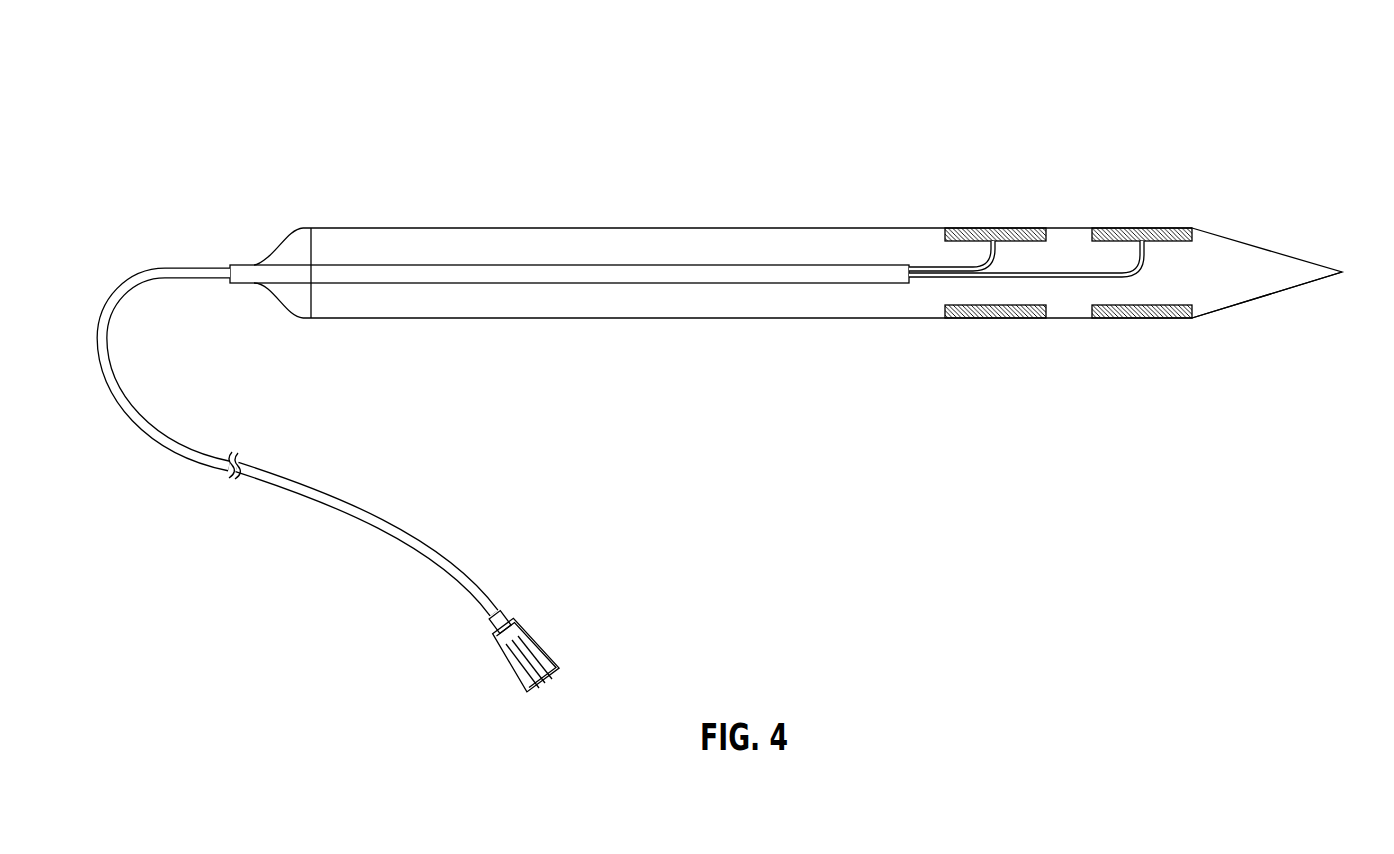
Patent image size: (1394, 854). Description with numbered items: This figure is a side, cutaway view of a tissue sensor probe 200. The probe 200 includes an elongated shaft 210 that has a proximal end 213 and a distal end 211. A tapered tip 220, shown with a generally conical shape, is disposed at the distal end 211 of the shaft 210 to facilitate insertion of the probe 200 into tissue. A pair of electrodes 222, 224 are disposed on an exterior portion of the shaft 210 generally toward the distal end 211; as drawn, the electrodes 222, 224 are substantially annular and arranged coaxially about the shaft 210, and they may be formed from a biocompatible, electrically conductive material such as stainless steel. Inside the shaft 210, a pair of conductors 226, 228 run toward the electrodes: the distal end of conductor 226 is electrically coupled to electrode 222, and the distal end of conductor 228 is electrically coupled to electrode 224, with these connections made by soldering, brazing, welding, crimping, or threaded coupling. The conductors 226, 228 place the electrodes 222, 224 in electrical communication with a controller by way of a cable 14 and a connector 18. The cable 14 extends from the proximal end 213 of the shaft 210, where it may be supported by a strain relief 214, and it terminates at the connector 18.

The tissue sensor probe 200 is at (887, 75).
The elongated shaft 210 is at (527, 227).
The proximal end 213 is at (318, 206).
The strain relief 214 is at (279, 241).
The electrode 222 is at (1142, 227).
The electrode 224 is at (997, 227).
The conductor 226 is at (934, 271).
The conductor 228 is at (934, 271).
The tapered tip 220 is at (1257, 245).
The distal end 211 is at (1297, 306).
The cable 14 is at (175, 443).
The connector 18 is at (500, 654).